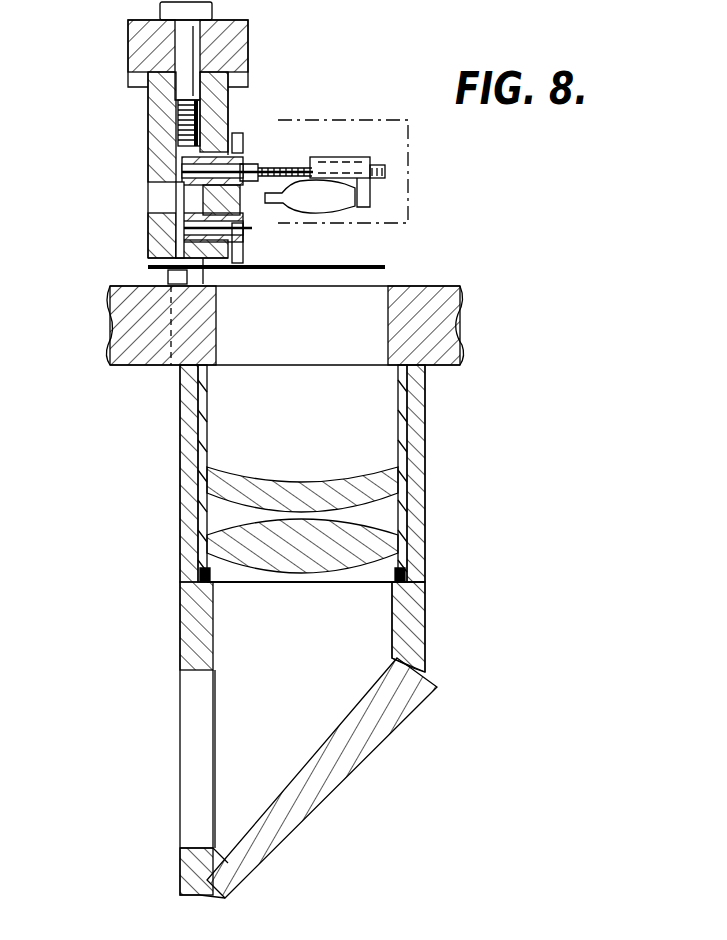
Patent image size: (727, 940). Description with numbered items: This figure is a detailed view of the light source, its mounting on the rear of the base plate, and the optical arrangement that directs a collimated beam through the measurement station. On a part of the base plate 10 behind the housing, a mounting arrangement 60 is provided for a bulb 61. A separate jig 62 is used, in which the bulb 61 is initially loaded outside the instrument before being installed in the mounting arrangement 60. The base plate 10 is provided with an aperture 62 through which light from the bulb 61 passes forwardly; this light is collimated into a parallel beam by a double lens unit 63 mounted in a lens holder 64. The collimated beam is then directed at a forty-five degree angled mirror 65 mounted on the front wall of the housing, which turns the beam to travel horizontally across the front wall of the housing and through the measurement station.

The base plate 10 is at (110, 294).
The mounting arrangement 60 is at (147, 118).
The bulb 61 is at (322, 205).
The jig / aperture 62 is at (352, 126).
The double lens unit 63 is at (400, 512).
The lens holder 64 is at (180, 505).
The angled mirror 65 is at (295, 808).